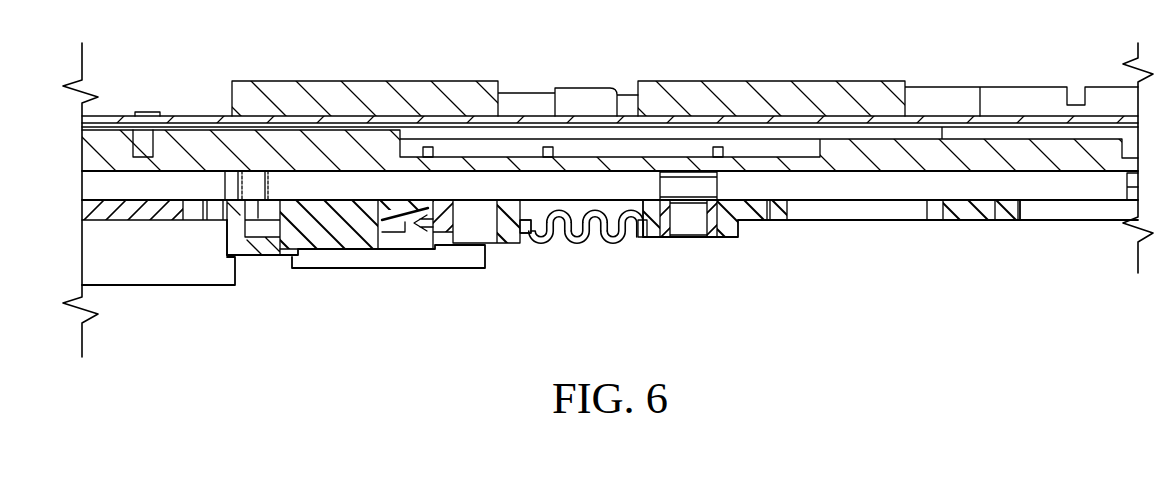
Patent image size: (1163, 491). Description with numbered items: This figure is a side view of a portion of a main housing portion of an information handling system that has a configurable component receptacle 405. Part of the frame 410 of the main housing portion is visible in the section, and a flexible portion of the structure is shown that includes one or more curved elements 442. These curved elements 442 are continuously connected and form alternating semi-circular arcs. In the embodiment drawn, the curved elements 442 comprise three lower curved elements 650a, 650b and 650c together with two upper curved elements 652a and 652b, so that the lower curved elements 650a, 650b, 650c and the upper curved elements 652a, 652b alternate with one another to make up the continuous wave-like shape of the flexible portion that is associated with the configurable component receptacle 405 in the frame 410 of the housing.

The upper curved element 652a is at (556, 211).
The upper curved element 652b is at (595, 210).
The lower curved element 650a is at (541, 245).
The lower curved element 650b is at (578, 244).
The lower curved element 650c is at (612, 245).
The curved elements 442 is at (602, 258).
The configurable component receptacle 405 is at (632, 249).
The frame 410 is at (937, 213).